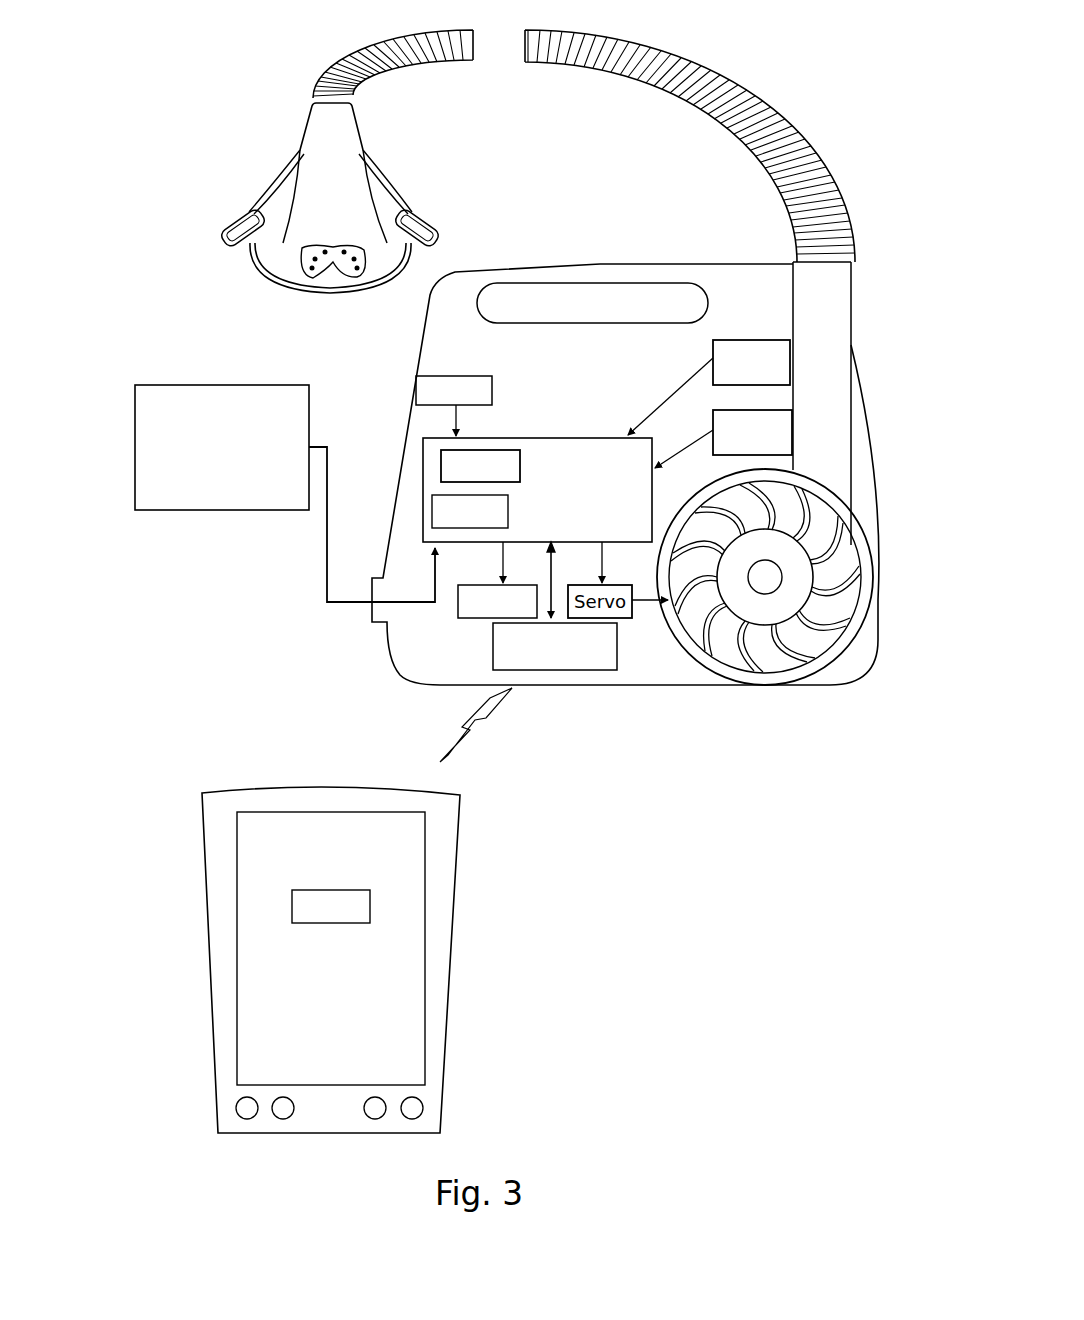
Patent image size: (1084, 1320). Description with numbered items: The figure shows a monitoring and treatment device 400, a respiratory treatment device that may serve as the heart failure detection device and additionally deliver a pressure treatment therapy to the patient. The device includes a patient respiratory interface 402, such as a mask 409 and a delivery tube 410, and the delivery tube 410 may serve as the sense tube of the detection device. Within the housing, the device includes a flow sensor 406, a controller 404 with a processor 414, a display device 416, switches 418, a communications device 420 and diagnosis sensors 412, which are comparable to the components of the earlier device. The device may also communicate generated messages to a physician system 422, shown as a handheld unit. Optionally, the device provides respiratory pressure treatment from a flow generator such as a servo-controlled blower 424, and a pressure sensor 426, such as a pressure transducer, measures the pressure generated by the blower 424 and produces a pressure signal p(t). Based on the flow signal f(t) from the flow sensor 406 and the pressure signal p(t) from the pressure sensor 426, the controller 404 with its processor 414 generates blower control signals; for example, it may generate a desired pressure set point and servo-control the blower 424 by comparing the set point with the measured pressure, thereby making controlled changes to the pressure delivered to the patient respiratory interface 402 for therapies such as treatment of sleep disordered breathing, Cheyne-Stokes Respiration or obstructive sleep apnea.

The monitoring and treatment device 400 is at (795, 62).
The patient respiratory interface 402 is at (290, 97).
The controller 404 is at (592, 438).
The flow sensor 406 is at (793, 352).
The mask 409 is at (277, 287).
The delivery tube 410 is at (680, 87).
The diagnosis sensors 412 is at (213, 385).
The processor 414 is at (441, 458).
The display device 416 is at (478, 620).
The switches 418 is at (455, 376).
The communications device 420 is at (573, 670).
The physician system 422 is at (205, 900).
The servo-controlled blower 424 is at (697, 672).
The pressure sensor 426 is at (793, 430).